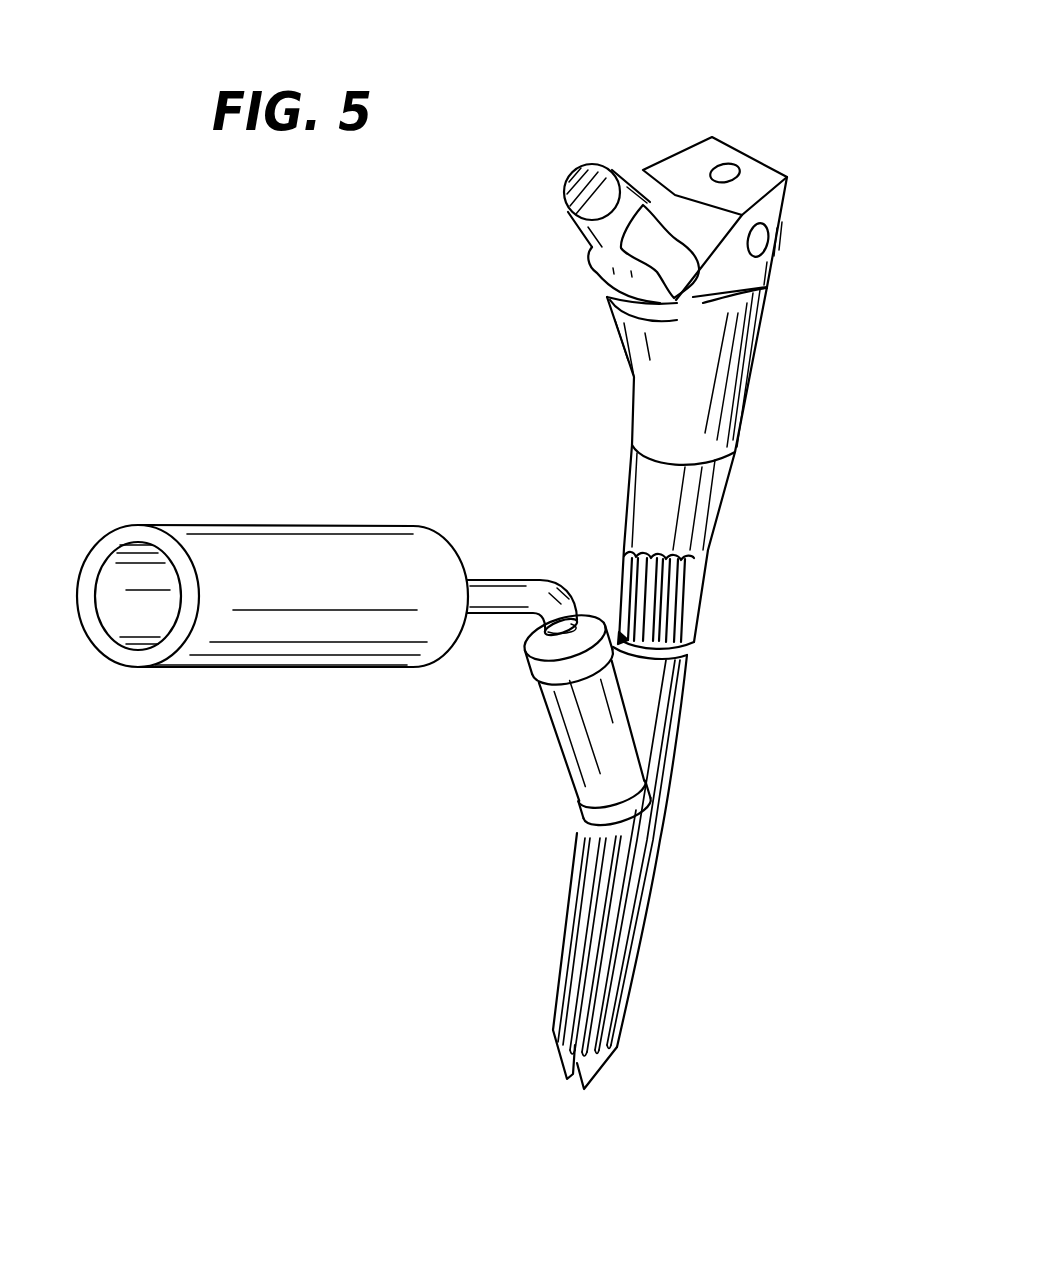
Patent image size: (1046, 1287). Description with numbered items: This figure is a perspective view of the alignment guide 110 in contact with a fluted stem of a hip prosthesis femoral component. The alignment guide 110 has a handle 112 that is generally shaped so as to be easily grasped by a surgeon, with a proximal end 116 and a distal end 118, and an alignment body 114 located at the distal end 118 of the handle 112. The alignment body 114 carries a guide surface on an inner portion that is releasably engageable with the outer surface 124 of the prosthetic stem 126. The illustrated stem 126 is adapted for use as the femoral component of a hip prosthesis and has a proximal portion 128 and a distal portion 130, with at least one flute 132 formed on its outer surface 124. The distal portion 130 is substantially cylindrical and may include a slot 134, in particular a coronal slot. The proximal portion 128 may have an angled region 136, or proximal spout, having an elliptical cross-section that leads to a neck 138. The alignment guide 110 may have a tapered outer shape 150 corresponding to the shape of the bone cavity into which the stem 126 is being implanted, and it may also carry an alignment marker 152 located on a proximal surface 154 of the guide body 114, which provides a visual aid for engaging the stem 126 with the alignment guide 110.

The alignment guide 110 is at (400, 408).
The handle 112 is at (286, 523).
The proximal end 116 is at (112, 526).
The distal end 118 is at (580, 603).
The tapered outer shape 150 is at (556, 733).
The prosthetic stem 126 is at (828, 360).
The neck 138 is at (623, 176).
The proximal portion 128 is at (768, 322).
The angled region 136 is at (613, 340).
The outer surface 124 is at (673, 506).
The flute 132 is at (680, 553).
The alignment marker 152 is at (627, 637).
The proximal surface 154 is at (685, 643).
The alignment body 114 is at (665, 688).
The distal portion 130 is at (643, 955).
The slot 134 is at (565, 1052).